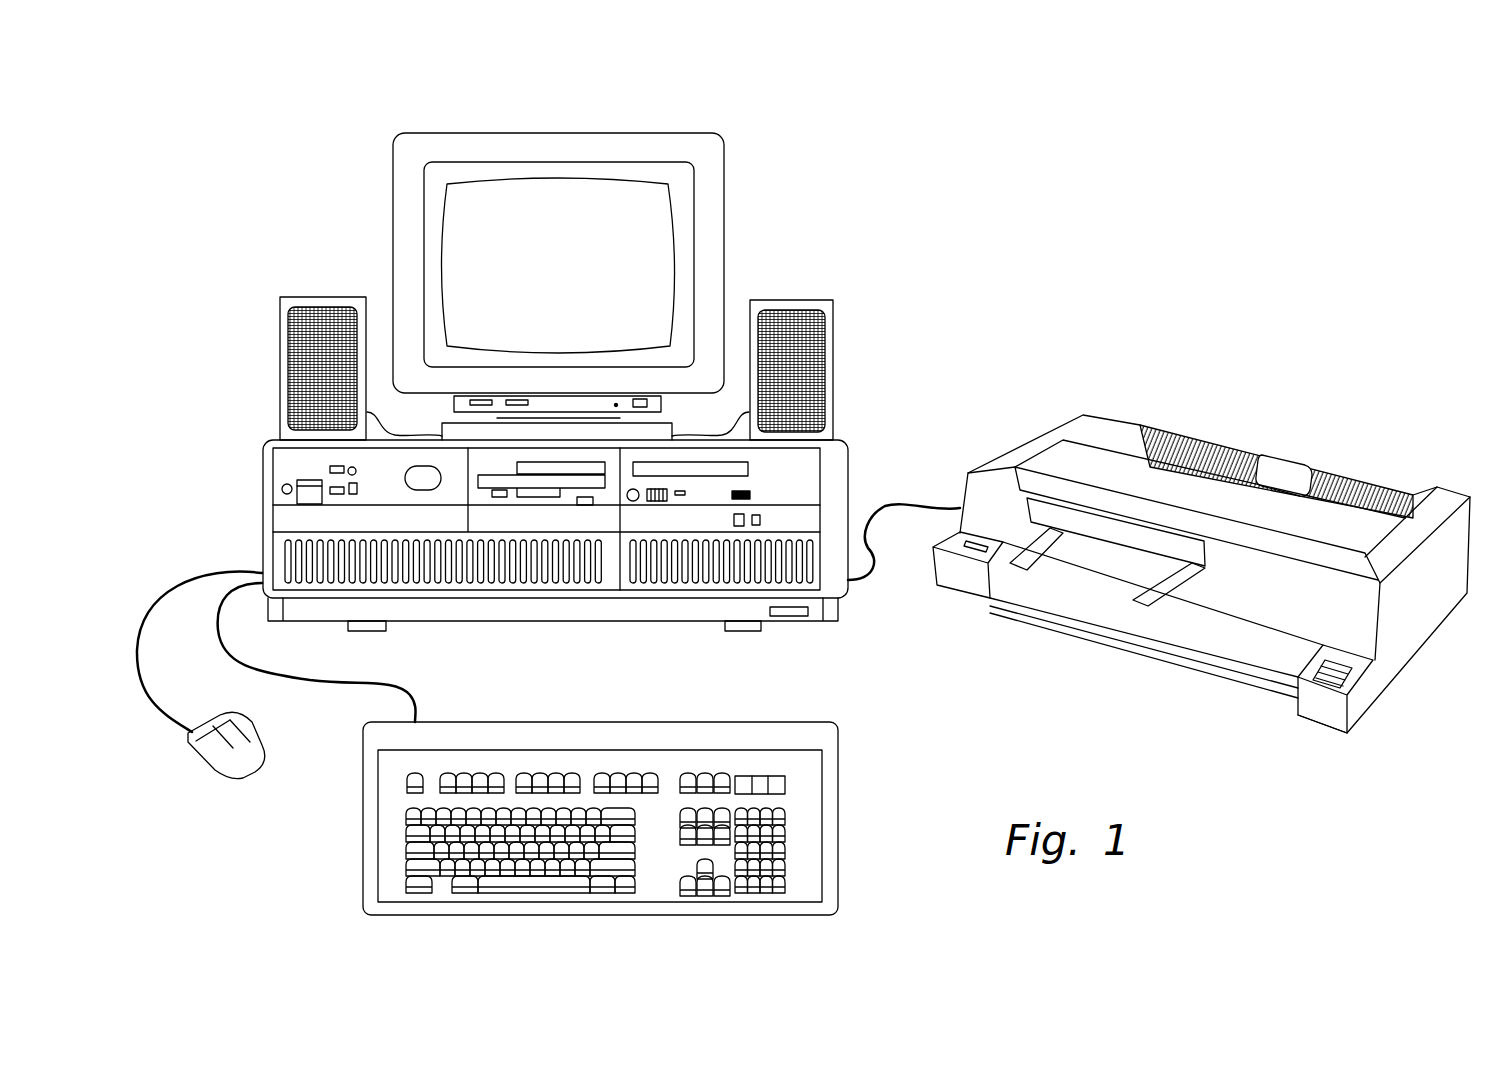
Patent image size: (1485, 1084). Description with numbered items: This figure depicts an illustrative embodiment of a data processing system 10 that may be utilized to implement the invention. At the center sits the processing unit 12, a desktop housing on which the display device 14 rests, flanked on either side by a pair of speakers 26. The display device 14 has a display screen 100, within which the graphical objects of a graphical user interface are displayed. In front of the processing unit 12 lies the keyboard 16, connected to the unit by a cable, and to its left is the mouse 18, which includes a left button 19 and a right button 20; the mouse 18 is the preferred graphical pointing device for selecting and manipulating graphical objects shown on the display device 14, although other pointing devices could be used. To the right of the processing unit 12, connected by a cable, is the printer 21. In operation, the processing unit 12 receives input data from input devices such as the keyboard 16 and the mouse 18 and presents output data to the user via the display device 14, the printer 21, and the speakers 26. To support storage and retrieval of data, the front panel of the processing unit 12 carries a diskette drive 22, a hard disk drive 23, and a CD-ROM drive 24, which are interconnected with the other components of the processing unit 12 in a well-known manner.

The data processing system 10 is at (957, 268).
The processing unit 12 is at (496, 548).
The display device 14 is at (606, 286).
The keyboard 16 is at (680, 716).
The mouse 18 is at (211, 693).
The left button 19 is at (188, 743).
The right button 20 is at (243, 724).
The printer 21 is at (994, 432).
The diskette drive 22 is at (540, 503).
The hard disk drive 23 is at (697, 520).
The CD-ROM drive 24 is at (683, 466).
The speakers 26 is at (280, 340).
The display screen 100 is at (587, 234).